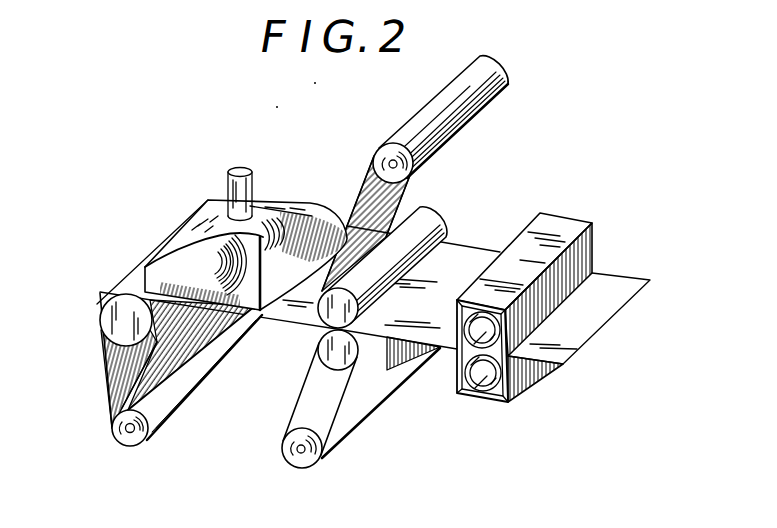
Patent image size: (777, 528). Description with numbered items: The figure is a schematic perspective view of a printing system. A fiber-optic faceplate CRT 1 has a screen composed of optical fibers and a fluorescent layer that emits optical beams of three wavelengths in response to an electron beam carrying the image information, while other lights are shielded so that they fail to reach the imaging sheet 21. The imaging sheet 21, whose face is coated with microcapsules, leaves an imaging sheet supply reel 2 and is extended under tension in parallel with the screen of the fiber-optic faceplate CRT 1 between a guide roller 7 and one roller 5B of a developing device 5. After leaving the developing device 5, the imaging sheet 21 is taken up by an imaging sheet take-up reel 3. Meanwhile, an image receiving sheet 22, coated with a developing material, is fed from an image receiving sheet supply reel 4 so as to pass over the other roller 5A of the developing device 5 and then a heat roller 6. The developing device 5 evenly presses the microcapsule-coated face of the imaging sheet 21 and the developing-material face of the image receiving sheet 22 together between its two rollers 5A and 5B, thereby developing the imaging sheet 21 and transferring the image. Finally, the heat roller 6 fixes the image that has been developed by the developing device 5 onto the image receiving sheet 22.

The fiber-optic faceplate CRT 1 is at (260, 197).
The imaging sheet supply reel 2 is at (112, 435).
The imaging sheet take-up reel 3 is at (290, 462).
The image receiving sheet supply reel 4 is at (375, 152).
The developing device 5 is at (354, 307).
The roller of the developing device 5A is at (319, 309).
The roller of the developing device 5B is at (328, 363).
The heat roller 6 is at (457, 348).
The guide roller 7 is at (103, 321).
The imaging sheet 21 is at (258, 311).
The image receiving sheet 22 is at (427, 182).